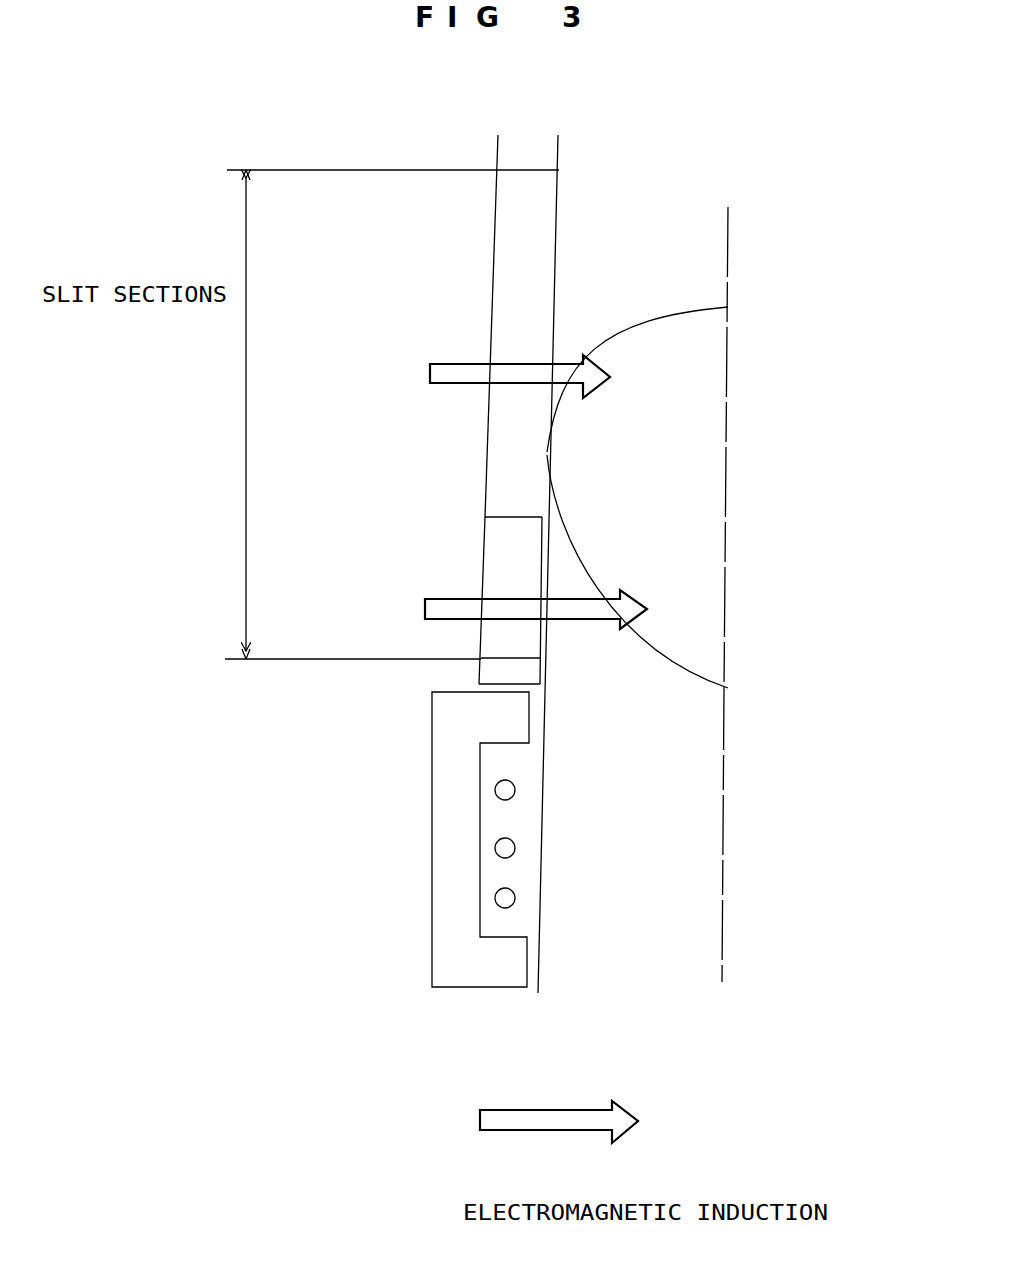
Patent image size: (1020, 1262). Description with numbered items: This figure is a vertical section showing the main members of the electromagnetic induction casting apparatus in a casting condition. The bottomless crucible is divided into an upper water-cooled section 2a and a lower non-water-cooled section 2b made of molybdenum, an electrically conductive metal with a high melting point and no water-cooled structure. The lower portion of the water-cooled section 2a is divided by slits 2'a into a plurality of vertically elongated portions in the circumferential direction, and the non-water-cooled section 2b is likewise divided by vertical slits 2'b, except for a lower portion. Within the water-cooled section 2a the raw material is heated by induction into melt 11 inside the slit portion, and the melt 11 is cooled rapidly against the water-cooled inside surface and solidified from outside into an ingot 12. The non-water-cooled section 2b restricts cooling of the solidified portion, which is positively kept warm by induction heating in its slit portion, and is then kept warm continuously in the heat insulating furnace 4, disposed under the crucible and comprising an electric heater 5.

The water-cooled section 2a is at (476, 207).
The slits 2'a is at (444, 326).
The vertical slits 2'b is at (445, 600).
The non-water-cooled section 2b is at (463, 629).
The heat insulating furnace 4 is at (445, 822).
The electric heater 5 is at (497, 847).
The melt 11 is at (713, 526).
The ingot 12 is at (700, 797).